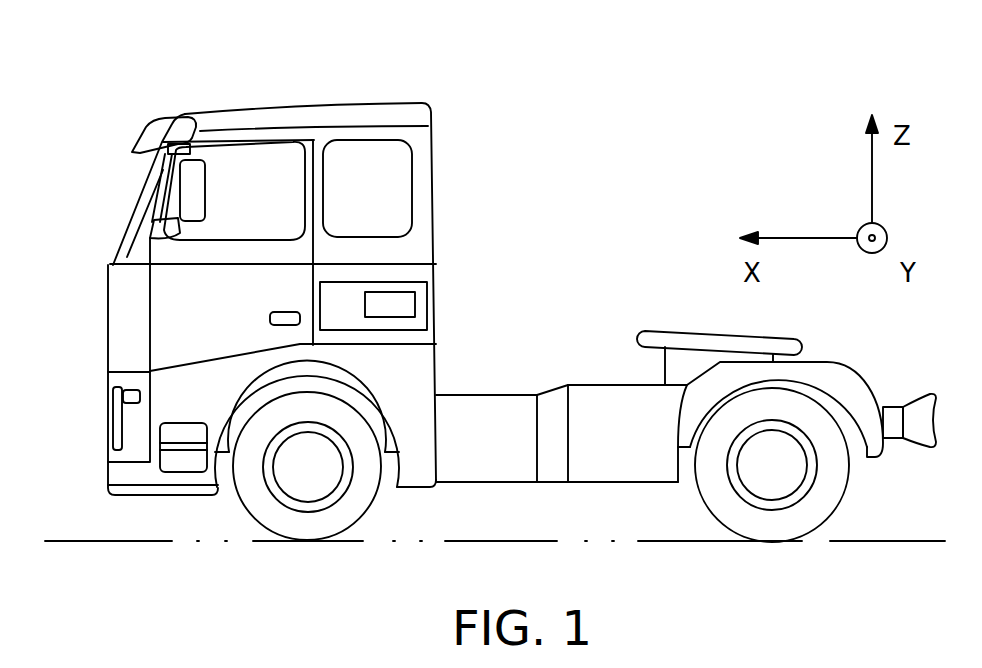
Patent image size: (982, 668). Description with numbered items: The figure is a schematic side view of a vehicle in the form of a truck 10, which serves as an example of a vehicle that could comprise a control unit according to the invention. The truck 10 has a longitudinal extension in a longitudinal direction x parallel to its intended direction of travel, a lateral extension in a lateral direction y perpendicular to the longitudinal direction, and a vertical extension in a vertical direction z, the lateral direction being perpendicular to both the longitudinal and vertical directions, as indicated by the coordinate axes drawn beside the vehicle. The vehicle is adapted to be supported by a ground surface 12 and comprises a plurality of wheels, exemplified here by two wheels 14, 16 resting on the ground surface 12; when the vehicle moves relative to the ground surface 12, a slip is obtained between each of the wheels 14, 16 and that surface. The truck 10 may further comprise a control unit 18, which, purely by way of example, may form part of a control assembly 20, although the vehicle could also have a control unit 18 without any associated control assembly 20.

The truck 10 is at (522, 348).
The ground surface 12 is at (132, 542).
The wheel 14 is at (313, 518).
The wheel 16 is at (780, 517).
The control unit 18 is at (415, 305).
The control assembly 20 is at (436, 288).